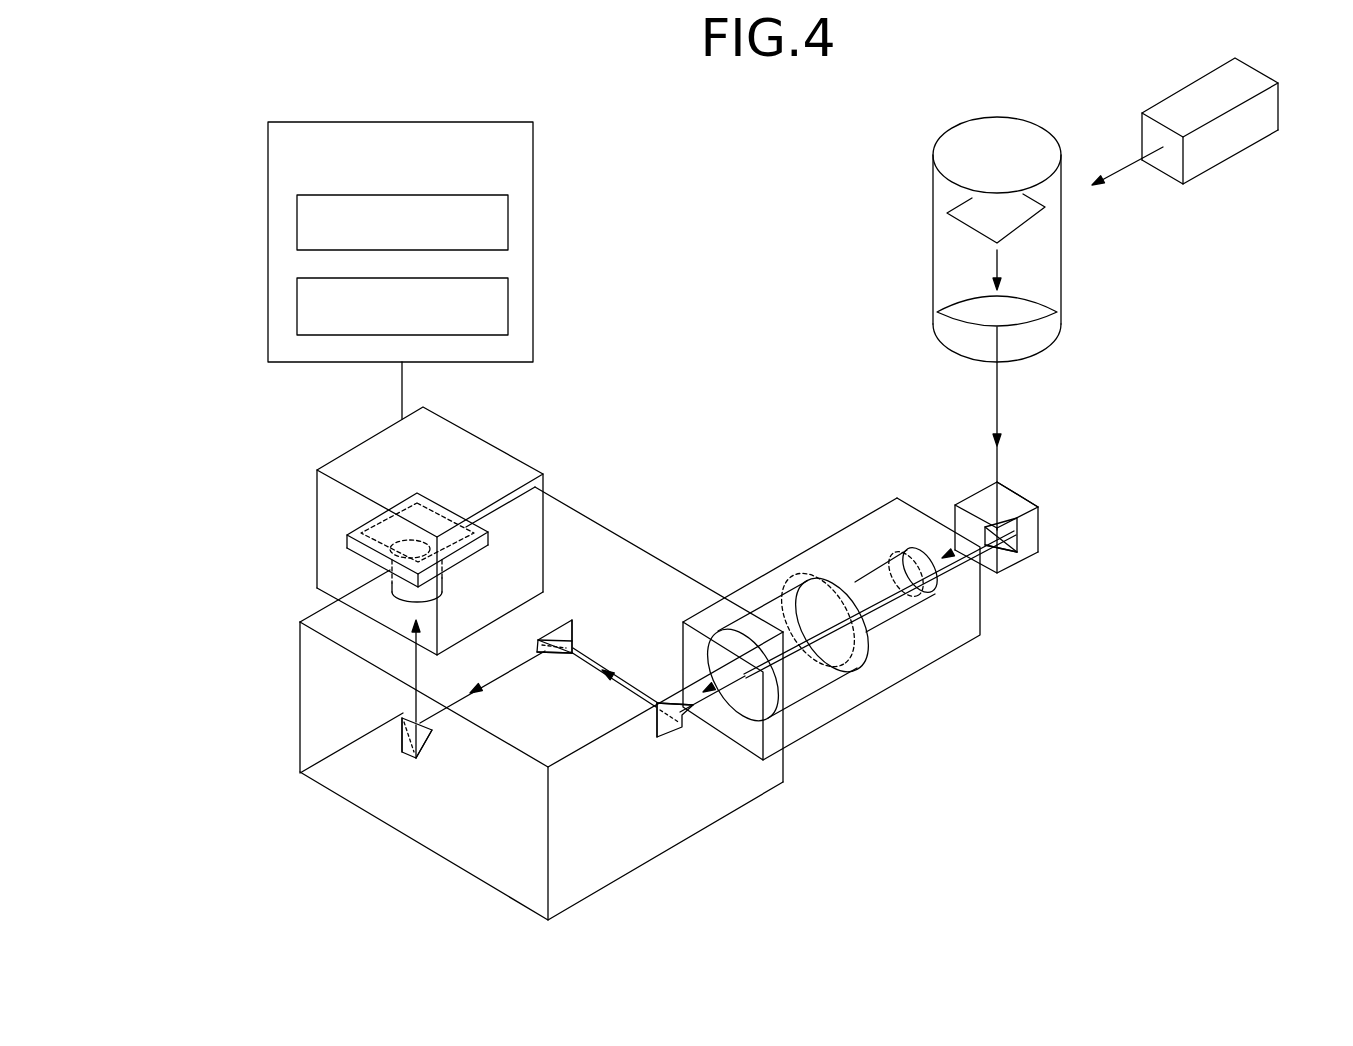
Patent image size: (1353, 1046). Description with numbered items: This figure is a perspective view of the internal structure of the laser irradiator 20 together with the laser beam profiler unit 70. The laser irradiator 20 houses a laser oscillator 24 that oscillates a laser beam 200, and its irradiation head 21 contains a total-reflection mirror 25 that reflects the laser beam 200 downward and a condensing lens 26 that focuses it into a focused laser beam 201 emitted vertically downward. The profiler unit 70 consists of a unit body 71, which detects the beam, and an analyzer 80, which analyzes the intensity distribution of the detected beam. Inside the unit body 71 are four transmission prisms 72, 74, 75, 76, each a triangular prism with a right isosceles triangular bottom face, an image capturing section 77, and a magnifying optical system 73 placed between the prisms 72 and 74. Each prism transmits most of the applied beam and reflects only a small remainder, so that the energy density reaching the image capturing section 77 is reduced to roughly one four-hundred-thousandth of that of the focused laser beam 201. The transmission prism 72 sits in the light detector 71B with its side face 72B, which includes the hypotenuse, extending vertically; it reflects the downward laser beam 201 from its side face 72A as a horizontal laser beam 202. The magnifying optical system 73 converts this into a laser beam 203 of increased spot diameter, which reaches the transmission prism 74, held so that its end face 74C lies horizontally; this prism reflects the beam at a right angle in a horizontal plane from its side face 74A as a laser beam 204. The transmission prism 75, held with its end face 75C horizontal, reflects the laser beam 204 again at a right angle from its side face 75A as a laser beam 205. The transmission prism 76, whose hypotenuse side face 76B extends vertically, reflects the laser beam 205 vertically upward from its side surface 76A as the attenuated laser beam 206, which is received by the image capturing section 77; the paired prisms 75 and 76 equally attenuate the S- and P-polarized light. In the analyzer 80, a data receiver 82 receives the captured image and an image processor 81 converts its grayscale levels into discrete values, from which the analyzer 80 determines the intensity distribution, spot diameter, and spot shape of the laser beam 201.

The laser irradiator 20 is at (1093, 131).
The irradiation head 21 is at (933, 237).
The laser oscillator 24 is at (1228, 140).
The total-reflection mirror 25 is at (972, 202).
The condensing lens 26 is at (972, 305).
The profiler unit 70 is at (613, 131).
The unit body 71 is at (748, 861).
The light detector 71B is at (1038, 501).
The transmission prism 72 is at (1040, 555).
The side face 72A is at (1010, 520).
The side face 72B is at (1020, 536).
The magnifying optical system 73 is at (835, 672).
The transmission prism 74 is at (660, 746).
The side face 74A is at (667, 700).
The end face 74C is at (657, 722).
The transmission prism 75 is at (567, 628).
The side face 75A is at (545, 657).
The end face 75C is at (566, 633).
The transmission prism 76 is at (400, 735).
The side surface 76A is at (437, 728).
The side face 76B is at (402, 752).
The image capturing section 77 is at (367, 560).
The analyzer 80 is at (449, 122).
The image processor 81 is at (297, 221).
The data receiver 82 is at (297, 305).
The laser beam 200 is at (1128, 170).
The focused laser beam 201 is at (999, 385).
The laser beam 202 is at (952, 548).
The laser beam 203 is at (712, 640).
The laser beam 204 is at (622, 672).
The laser beam 205 is at (503, 680).
The laser beam 206 is at (415, 657).